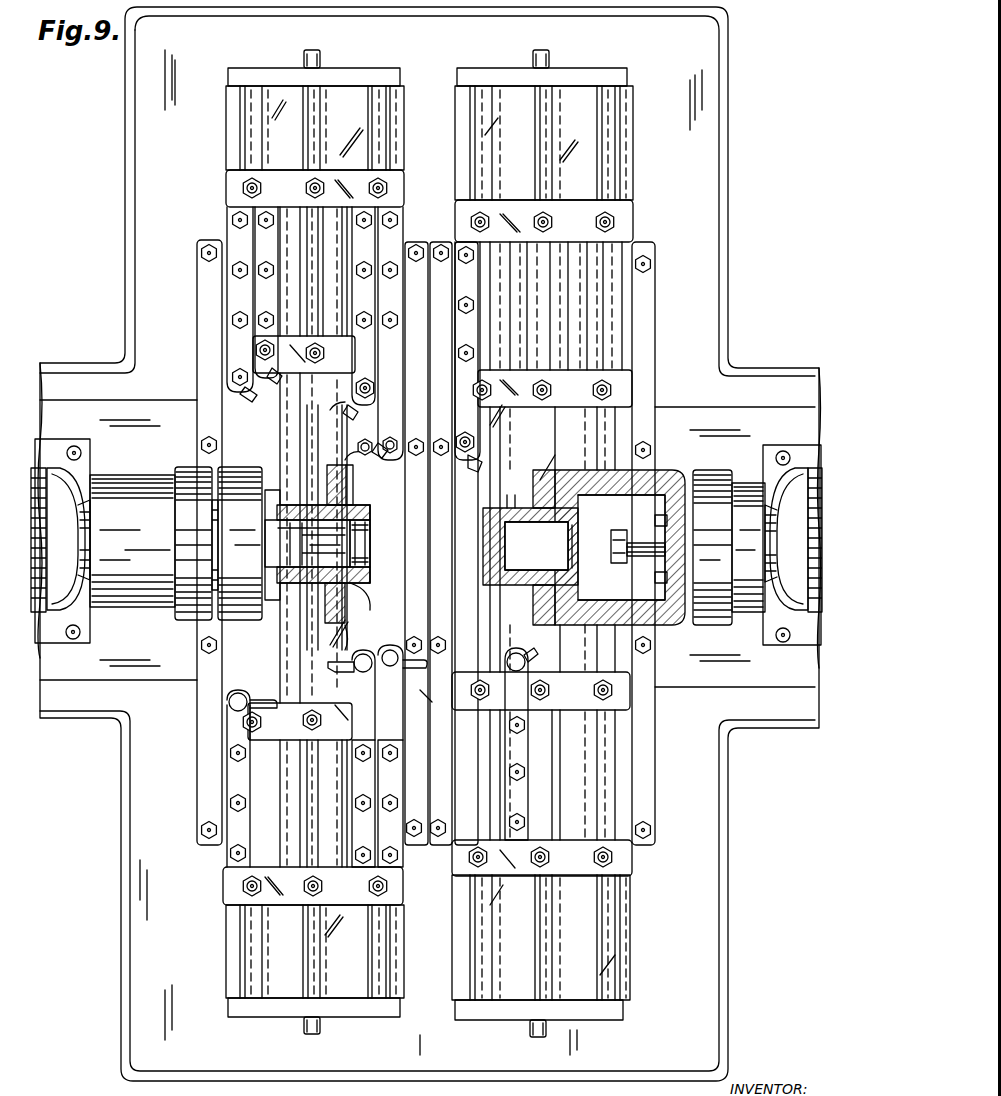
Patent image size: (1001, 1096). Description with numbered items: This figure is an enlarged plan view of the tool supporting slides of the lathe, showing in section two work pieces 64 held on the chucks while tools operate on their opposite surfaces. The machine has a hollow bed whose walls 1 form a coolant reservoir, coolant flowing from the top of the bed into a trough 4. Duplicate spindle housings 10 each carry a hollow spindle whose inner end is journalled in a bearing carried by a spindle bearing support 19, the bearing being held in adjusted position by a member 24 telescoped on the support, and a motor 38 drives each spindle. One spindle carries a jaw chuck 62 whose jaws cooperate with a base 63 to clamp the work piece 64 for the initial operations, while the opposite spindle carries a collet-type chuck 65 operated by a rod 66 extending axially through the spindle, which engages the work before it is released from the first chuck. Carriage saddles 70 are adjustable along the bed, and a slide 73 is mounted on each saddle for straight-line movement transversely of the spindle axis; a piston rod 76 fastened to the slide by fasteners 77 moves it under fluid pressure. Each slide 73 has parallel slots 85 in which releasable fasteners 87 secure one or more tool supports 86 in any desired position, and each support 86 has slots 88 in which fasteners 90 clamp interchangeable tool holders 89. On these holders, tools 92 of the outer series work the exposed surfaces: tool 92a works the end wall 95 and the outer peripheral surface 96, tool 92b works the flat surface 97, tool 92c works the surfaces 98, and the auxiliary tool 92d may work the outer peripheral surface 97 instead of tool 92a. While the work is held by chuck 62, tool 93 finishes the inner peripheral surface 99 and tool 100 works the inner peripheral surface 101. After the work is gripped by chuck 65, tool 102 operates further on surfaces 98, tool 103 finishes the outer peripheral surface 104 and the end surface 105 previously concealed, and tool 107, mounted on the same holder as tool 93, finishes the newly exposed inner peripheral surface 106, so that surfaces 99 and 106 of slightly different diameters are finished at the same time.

The walls of the bed 1 is at (78, 403).
The trough 4 is at (125, 258).
The spindle housing 10 is at (48, 442).
The spindle bearing support 19 is at (133, 598).
The member 24 is at (192, 605).
The motor 38 is at (70, 500).
The chuck 62 is at (272, 490).
The base 63 is at (222, 540).
The work piece 64 is at (370, 583).
The chuck 65 is at (565, 498).
The rod 66 is at (660, 552).
The carriage saddle 70 is at (198, 318).
The slide 73 is at (226, 150).
The piston rod 76 is at (312, 52).
The fasteners 77 is at (358, 80).
The slots 85 is at (245, 127).
The tool support 86 is at (228, 195).
The releasable fasteners 87 is at (388, 186).
The slots 88 is at (300, 285).
The tool holder 89 is at (258, 348).
The releasable fasteners 90 is at (236, 300).
The tools 92 is at (348, 408).
The tool 92a is at (385, 458).
The tool 92b is at (345, 403).
The tool 92c is at (242, 392).
The tool 92d is at (280, 385).
The tool 93 is at (350, 673).
The end wall 95 is at (372, 535).
The outer peripheral surface 96 is at (349, 505).
The flat surface 97 is at (345, 462).
The surfaces 98 is at (330, 495).
The inner peripheral surface 99 is at (372, 556).
The tool 100 is at (270, 699).
The inner peripheral surface 101 is at (325, 608).
The tool 102 is at (528, 652).
The tool 103 is at (482, 462).
The outer peripheral surface 104 is at (520, 482).
The finished surface 105 is at (480, 517).
The inner peripheral surface 106 is at (290, 565).
The tool 107 is at (418, 670).